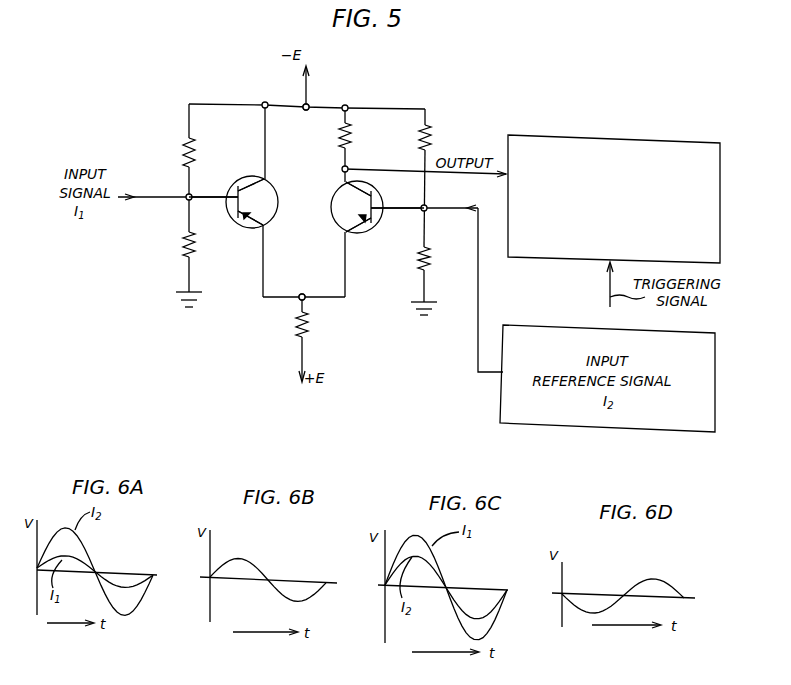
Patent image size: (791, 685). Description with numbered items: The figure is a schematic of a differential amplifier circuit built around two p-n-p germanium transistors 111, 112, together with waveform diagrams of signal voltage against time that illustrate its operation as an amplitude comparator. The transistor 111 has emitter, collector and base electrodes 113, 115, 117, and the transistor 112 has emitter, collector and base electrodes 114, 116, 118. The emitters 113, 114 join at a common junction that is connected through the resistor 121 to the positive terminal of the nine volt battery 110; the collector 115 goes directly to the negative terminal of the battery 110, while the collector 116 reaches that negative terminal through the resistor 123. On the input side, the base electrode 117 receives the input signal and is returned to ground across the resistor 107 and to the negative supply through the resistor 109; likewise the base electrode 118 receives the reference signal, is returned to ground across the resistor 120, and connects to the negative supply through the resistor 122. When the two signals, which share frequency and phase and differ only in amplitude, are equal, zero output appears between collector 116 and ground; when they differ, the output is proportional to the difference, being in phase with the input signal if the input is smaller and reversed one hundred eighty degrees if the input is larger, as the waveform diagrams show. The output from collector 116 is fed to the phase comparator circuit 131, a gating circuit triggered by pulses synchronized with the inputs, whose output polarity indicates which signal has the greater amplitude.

The resistor 107 is at (191, 243).
The resistor 109 is at (186, 146).
The nine volt battery 110 is at (310, 92).
The transistor 111 is at (276, 182).
The transistor 112 is at (331, 196).
The emitter electrode 113 is at (262, 214).
The emitter electrode 114 is at (347, 224).
The collector electrode 115 is at (253, 180).
The collector electrode 116 is at (361, 185).
The base electrode 117 is at (209, 195).
The base electrode 118 is at (393, 212).
The resistor 120 is at (412, 262).
The resistor 121 is at (296, 322).
The resistor 122 is at (437, 147).
The resistor 123 is at (340, 135).
The phase comparator circuit 131 is at (632, 140).